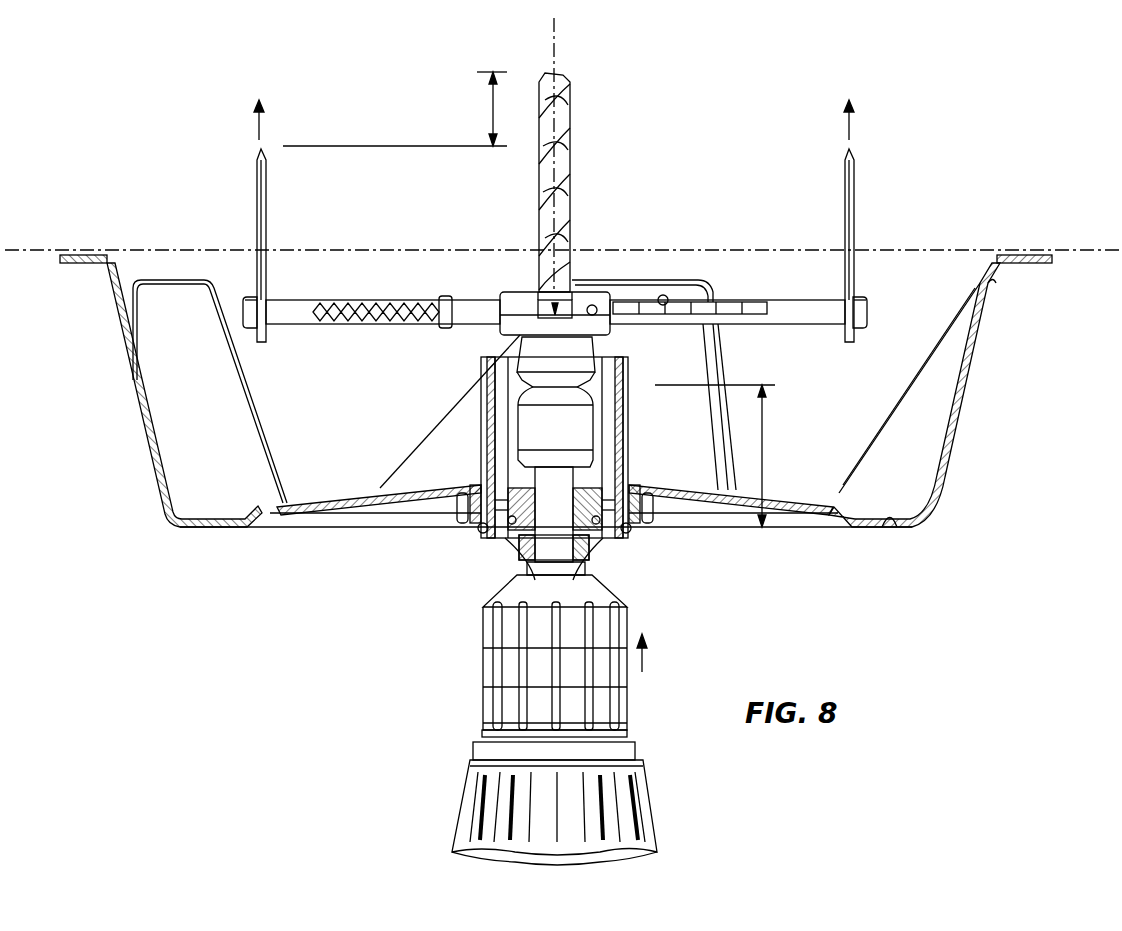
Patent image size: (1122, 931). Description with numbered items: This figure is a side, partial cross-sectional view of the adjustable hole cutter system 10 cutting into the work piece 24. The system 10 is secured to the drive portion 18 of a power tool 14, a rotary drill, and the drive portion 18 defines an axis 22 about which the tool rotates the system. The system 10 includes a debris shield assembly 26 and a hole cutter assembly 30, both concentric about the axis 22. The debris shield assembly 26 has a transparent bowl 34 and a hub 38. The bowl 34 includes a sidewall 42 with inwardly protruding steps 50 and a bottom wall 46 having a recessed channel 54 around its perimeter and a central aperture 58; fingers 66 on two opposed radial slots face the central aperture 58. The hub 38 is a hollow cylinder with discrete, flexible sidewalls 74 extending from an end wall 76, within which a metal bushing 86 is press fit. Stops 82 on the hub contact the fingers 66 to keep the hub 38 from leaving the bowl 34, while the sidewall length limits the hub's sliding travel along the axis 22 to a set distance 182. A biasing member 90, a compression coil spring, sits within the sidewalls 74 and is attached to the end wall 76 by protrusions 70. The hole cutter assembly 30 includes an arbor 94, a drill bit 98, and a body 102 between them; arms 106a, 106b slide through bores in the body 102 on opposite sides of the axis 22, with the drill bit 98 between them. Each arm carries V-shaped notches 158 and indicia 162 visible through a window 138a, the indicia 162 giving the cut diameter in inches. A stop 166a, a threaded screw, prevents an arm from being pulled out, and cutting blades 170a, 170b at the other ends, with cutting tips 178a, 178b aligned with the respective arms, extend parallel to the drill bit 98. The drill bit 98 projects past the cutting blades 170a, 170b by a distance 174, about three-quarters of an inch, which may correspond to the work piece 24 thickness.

The adjustable hole cutter system 10 is at (1007, 571).
The power tool 14 is at (662, 830).
The drive portion 18 is at (626, 686).
The axis 22 is at (556, 50).
The work piece 24 is at (1065, 250).
The debris shield assembly 26 is at (768, 608).
The hole cutter assembly 30 is at (740, 150).
The bowl 34 is at (1020, 413).
The hub 38 is at (412, 410).
The sidewall 42 is at (945, 470).
The bottom wall 46 is at (800, 507).
The steps 50 is at (745, 290).
The channel 54 is at (892, 518).
The central aperture 58 is at (580, 485).
The fingers 66 is at (486, 533).
The protrusions 70 is at (525, 538).
The sidewalls 74 is at (490, 450).
The end wall 76 is at (505, 540).
The stops 82 is at (488, 393).
The bushing 86 is at (595, 562).
The biasing member 90 is at (530, 490).
The arbor 94 is at (568, 417).
The drill bit 98 is at (561, 187).
The body 102 is at (590, 268).
The arm 106a is at (793, 324).
The arm 106b is at (300, 298).
The window 138a is at (550, 292).
The notches 158 is at (382, 282).
The indicia 162 is at (742, 288).
The stop 166a is at (448, 296).
The cutting blade 170a is at (858, 228).
The cutting blade 170b is at (248, 190).
The distance 174 is at (492, 110).
The cutting tip 178a is at (854, 151).
The cutting tip 178b is at (257, 152).
The set distance 182 is at (765, 452).